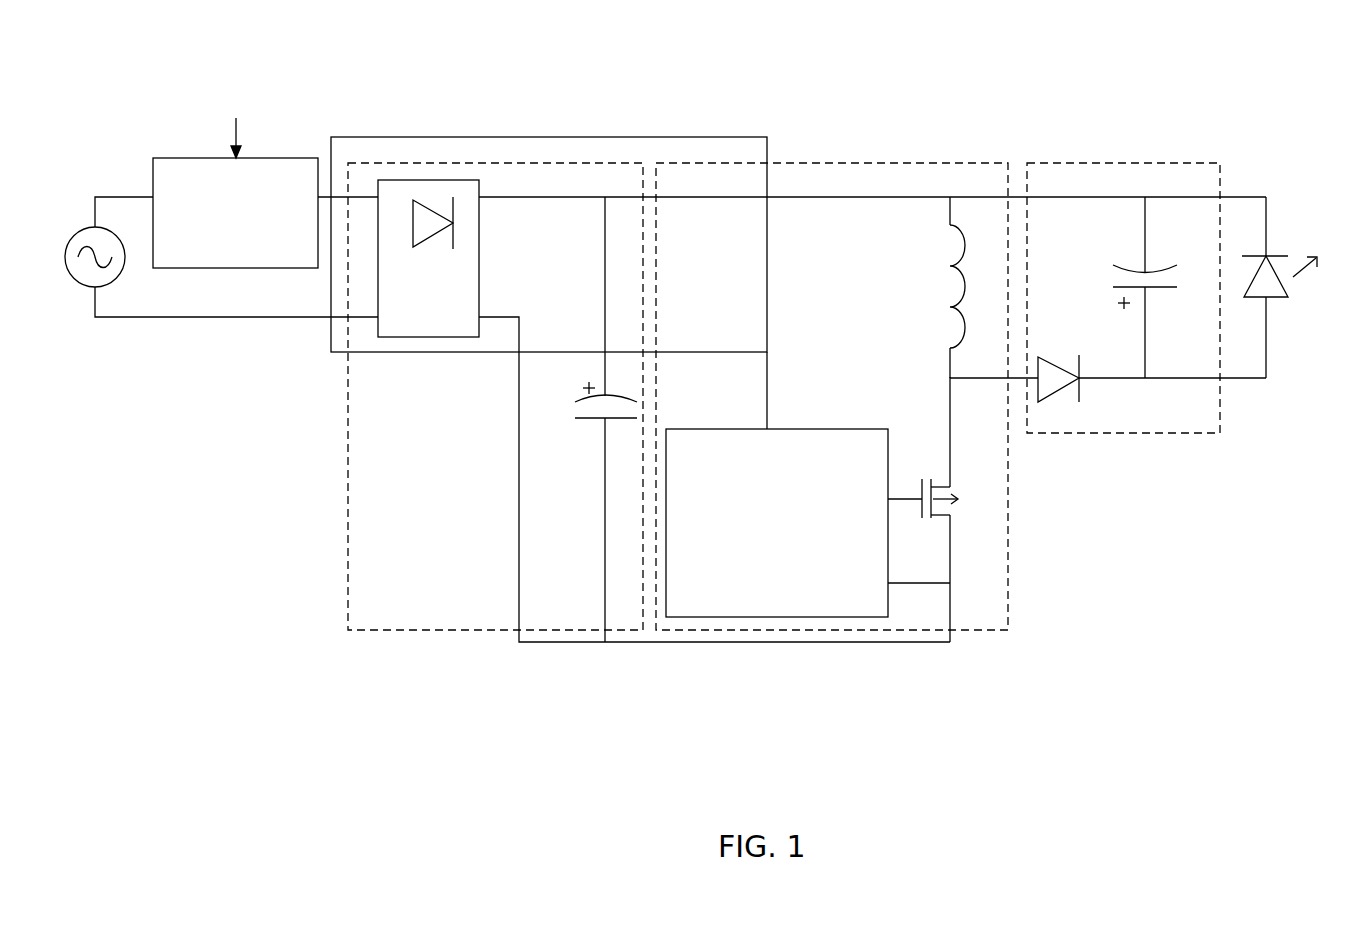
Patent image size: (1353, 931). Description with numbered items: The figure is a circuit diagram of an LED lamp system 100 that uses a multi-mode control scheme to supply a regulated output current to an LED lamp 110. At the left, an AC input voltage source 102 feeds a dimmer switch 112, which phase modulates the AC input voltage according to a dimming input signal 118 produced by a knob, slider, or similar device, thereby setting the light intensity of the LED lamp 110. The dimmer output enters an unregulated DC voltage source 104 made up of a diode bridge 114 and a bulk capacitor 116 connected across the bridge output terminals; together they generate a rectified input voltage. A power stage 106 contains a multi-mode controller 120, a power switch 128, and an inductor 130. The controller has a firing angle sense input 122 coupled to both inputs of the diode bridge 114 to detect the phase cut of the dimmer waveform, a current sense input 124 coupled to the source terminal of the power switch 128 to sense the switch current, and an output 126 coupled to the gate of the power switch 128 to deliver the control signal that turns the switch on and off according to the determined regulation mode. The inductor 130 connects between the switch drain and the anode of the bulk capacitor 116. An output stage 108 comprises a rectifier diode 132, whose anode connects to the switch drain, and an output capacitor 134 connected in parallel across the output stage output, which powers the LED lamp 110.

The LED lamp system 100 is at (1275, 70).
The AC input voltage source 102 is at (125, 272).
The unregulated DC voltage source 104 is at (390, 155).
The power stage 106 is at (810, 163).
The output stage 108 is at (1050, 163).
The LED lamp 110 is at (1293, 260).
The dimmer switch 112 is at (218, 254).
The diode bridge 114 is at (409, 331).
The bulk capacitor C1 116 is at (583, 425).
The dimming input signal 118 is at (237, 110).
The multi-mode controller 120 is at (710, 611).
The firing angle sense input 122 is at (766, 425).
The I_SENSE input 124 is at (893, 582).
The output 126 is at (890, 492).
The power switch S1 128 is at (955, 480).
The inductor L1 130 is at (948, 260).
The rectifier diode D1 132 is at (1043, 345).
The output capacitor C2 134 is at (1165, 268).